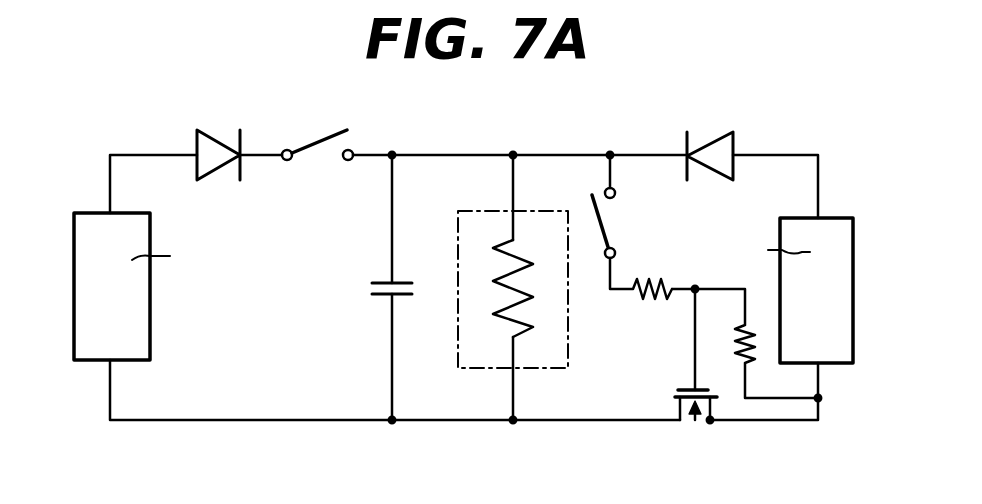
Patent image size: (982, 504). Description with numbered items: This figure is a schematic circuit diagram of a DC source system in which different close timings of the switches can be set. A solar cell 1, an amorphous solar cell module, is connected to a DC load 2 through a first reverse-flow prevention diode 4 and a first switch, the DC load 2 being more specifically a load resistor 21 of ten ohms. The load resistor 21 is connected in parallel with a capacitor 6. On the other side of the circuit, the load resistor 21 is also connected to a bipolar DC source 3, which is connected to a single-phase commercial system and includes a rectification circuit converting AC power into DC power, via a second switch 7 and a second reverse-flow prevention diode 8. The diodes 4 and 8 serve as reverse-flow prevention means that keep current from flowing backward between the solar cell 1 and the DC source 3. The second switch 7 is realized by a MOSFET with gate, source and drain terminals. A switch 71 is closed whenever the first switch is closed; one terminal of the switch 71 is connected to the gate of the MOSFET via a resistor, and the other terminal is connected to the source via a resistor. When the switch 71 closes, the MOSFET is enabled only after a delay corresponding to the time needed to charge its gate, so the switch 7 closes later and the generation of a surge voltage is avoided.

The solar cell 1 is at (128, 212).
The DC load 2 is at (547, 212).
The load resistor 21 is at (518, 254).
The DC source 3 is at (833, 216).
The first reverse-flow prevention diode 4 is at (215, 140).
The capacitor 6 is at (400, 281).
The second switch 7 is at (676, 391).
The switch 71 is at (612, 212).
The second reverse-flow prevention diode 8 is at (702, 143).